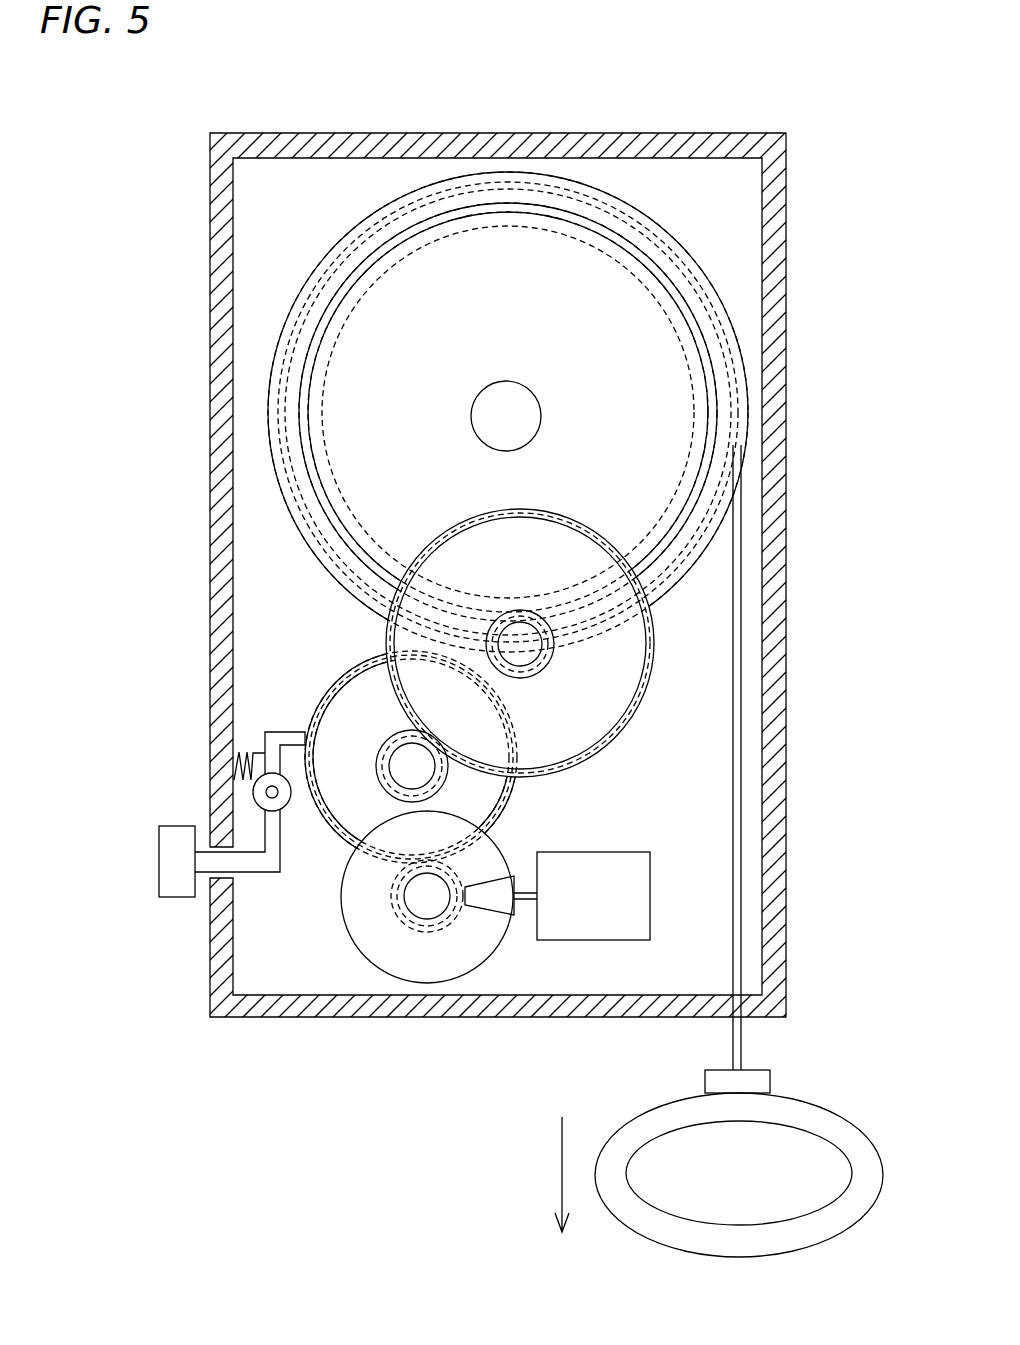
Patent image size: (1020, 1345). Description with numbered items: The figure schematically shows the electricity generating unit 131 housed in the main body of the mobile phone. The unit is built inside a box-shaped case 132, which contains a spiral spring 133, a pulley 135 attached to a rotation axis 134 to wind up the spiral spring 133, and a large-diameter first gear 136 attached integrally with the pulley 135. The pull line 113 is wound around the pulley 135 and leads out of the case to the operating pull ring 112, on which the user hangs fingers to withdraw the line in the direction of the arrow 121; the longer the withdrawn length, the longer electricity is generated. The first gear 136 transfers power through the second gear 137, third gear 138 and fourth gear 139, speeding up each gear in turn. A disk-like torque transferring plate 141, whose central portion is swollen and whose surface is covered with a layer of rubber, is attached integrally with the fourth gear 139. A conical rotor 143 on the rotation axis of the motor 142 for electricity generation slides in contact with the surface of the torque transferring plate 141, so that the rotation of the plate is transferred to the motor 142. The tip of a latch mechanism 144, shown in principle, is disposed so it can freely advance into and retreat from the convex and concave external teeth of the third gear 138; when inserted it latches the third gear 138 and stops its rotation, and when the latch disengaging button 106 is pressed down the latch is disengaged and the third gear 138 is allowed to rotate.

The latch disengaging button 106 is at (176, 826).
The operating pull ring 112 is at (797, 1252).
The pull line 113 is at (740, 782).
The arrow 121 is at (560, 1165).
The electricity generating unit 131 is at (236, 1176).
The box-shaped case 132 is at (722, 133).
The spiral spring 133 is at (628, 312).
The rotation axis 134 is at (504, 381).
The pulley 135 is at (633, 208).
The first gear 136 is at (707, 368).
The second gear 137 is at (600, 685).
The third gear 138 is at (362, 715).
The fourth gear 139 is at (397, 913).
The torque transferring plate 141 is at (477, 940).
The motor 142 is at (586, 852).
The conical rotor 143 is at (490, 887).
The latch mechanism 144 is at (258, 874).